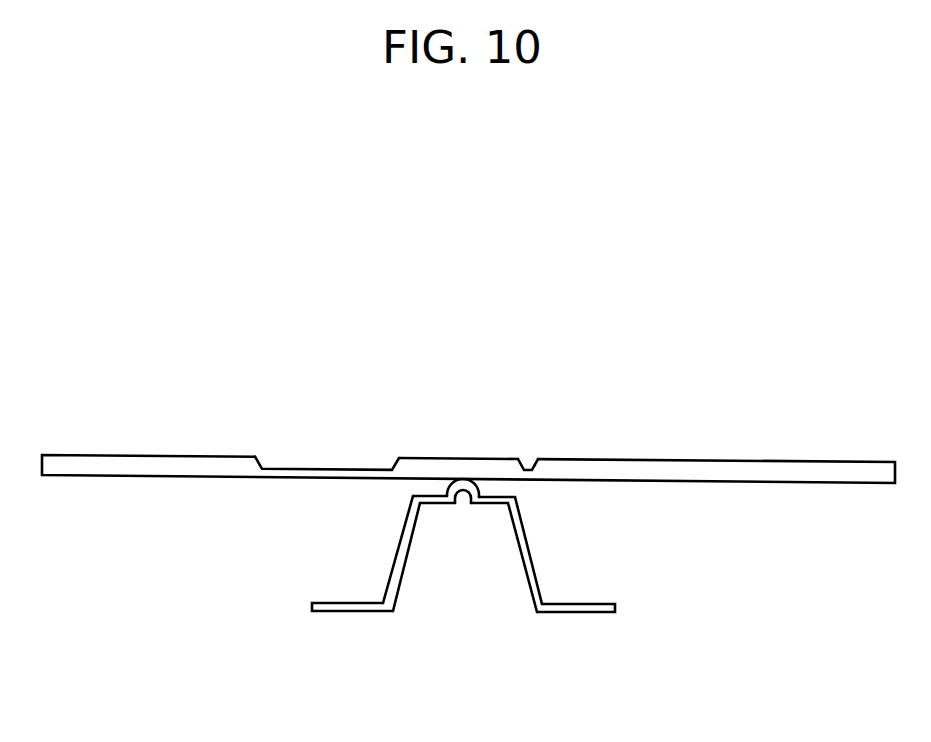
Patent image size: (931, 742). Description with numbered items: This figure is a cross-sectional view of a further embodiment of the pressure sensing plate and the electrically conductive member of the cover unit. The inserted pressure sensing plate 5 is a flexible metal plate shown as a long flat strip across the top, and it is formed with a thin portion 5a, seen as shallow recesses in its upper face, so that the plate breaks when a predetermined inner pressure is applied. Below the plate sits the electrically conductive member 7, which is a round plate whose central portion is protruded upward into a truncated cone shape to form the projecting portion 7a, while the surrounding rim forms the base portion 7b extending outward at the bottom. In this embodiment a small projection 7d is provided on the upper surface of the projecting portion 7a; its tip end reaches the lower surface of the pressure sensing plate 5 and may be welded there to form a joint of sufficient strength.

The inserted pressure sensing plate 5 is at (752, 497).
The thin portion 5a is at (330, 468).
The electrically conductive member 7 is at (540, 564).
The projecting portion 7a is at (410, 528).
The base portion 7b is at (573, 615).
The projection 7d is at (447, 494).